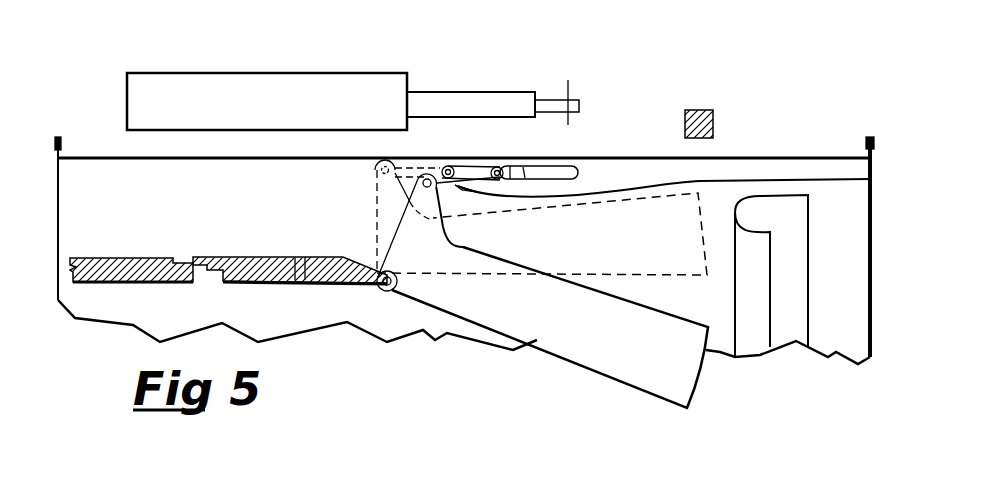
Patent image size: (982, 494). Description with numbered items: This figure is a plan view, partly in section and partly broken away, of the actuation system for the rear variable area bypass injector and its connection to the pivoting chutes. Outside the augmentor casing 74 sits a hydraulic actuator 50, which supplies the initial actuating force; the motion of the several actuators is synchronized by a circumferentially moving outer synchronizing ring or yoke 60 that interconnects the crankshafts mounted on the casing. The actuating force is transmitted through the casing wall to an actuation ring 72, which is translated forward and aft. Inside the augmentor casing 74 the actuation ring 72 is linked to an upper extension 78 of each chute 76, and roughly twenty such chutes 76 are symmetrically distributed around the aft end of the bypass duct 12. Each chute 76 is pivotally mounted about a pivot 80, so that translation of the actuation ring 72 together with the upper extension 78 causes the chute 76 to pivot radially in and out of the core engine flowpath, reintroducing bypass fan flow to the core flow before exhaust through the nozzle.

The bypass duct 12 is at (188, 230).
The hydraulic actuator 50 is at (407, 85).
The synchronizing ring or yoke 60 is at (697, 110).
The actuation ring 72 is at (537, 167).
The augmentor casing 74 is at (806, 157).
The pivoting chute 76 is at (705, 378).
The upper extension 78 is at (383, 222).
The pivot 80 is at (387, 292).